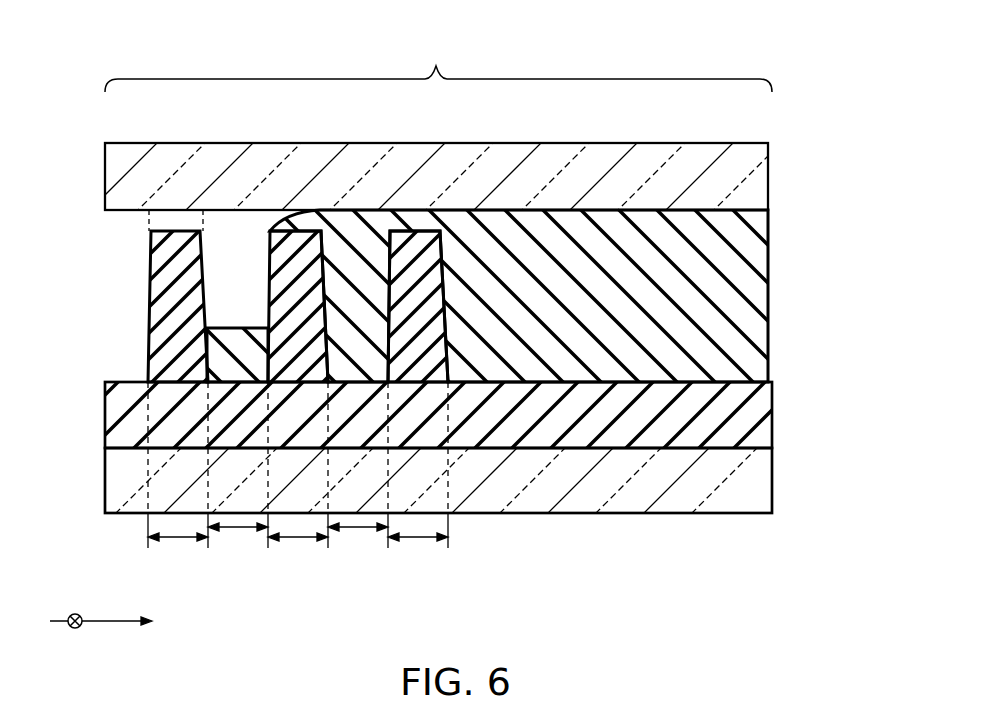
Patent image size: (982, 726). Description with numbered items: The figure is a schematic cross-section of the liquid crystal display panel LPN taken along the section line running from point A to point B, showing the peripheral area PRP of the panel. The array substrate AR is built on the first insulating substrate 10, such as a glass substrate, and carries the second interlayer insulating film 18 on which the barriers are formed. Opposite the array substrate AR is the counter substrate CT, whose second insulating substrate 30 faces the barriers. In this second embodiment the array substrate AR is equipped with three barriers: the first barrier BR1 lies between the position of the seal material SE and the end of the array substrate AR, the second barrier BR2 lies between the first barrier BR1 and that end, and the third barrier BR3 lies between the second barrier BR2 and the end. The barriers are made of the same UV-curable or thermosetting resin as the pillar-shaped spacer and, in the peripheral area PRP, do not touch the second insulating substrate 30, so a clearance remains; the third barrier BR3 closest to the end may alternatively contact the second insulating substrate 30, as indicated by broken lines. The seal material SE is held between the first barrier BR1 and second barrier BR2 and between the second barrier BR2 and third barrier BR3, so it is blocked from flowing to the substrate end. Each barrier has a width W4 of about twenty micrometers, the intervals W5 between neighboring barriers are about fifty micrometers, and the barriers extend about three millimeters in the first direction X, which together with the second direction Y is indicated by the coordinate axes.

The peripheral area PRP is at (438, 66).
The line A-B end point A is at (102, 123).
The line A-B end point B is at (772, 126).
The second insulating substrate 30 is at (451, 175).
The counter substrate CT is at (776, 178).
The liquid crystal display panel LPN is at (776, 292).
The seal material SE is at (569, 215).
The first barrier BR1 is at (420, 237).
The second barrier BR2 is at (302, 237).
The third barrier BR3 is at (181, 237).
The second interlayer insulating film 18 is at (118, 407).
The first insulating substrate 10 is at (454, 480).
The array substrate AR is at (778, 470).
The width of barrier W4 is at (178, 541).
The interval between barriers W5 is at (240, 530).
The first direction X is at (74, 634).
The second direction Y is at (109, 622).